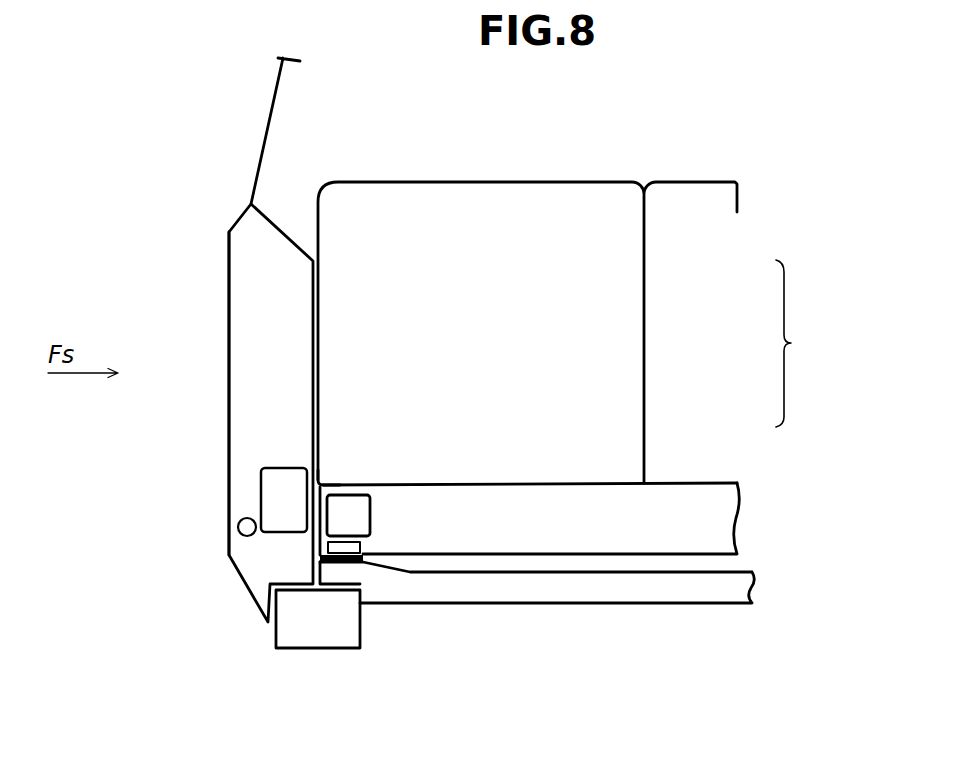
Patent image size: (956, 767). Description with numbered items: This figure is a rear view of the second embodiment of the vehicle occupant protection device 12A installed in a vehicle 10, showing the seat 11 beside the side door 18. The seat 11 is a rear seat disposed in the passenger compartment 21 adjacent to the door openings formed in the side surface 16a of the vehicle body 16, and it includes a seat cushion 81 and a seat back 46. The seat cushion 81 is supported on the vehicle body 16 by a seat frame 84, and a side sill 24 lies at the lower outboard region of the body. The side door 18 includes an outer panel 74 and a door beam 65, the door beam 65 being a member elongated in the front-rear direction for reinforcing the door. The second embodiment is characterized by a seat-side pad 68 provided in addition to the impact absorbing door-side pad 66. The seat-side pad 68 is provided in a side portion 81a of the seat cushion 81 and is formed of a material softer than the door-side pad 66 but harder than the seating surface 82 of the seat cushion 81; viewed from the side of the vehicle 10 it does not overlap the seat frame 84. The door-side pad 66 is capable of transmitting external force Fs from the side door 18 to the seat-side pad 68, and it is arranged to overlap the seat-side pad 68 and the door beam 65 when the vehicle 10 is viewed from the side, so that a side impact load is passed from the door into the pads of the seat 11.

The vehicle 10 is at (208, 96).
The seat 11 is at (802, 343).
The vehicle occupant protection device 12A is at (352, 455).
The vehicle body 16 is at (267, 603).
The side surface 16a is at (276, 632).
The side door 18 is at (216, 413).
The passenger compartment 21 is at (657, 121).
The side sill 24 is at (315, 633).
The seat back 46 is at (615, 305).
The door beam 65 is at (238, 525).
The door-side pad 66 is at (253, 474).
The seat-side pad 68 is at (350, 495).
The outer panel 74 is at (227, 310).
The seat cushion 81 is at (616, 502).
The side portion 81a is at (316, 543).
The seating surface 82 is at (555, 483).
The seat frame 84 is at (360, 548).